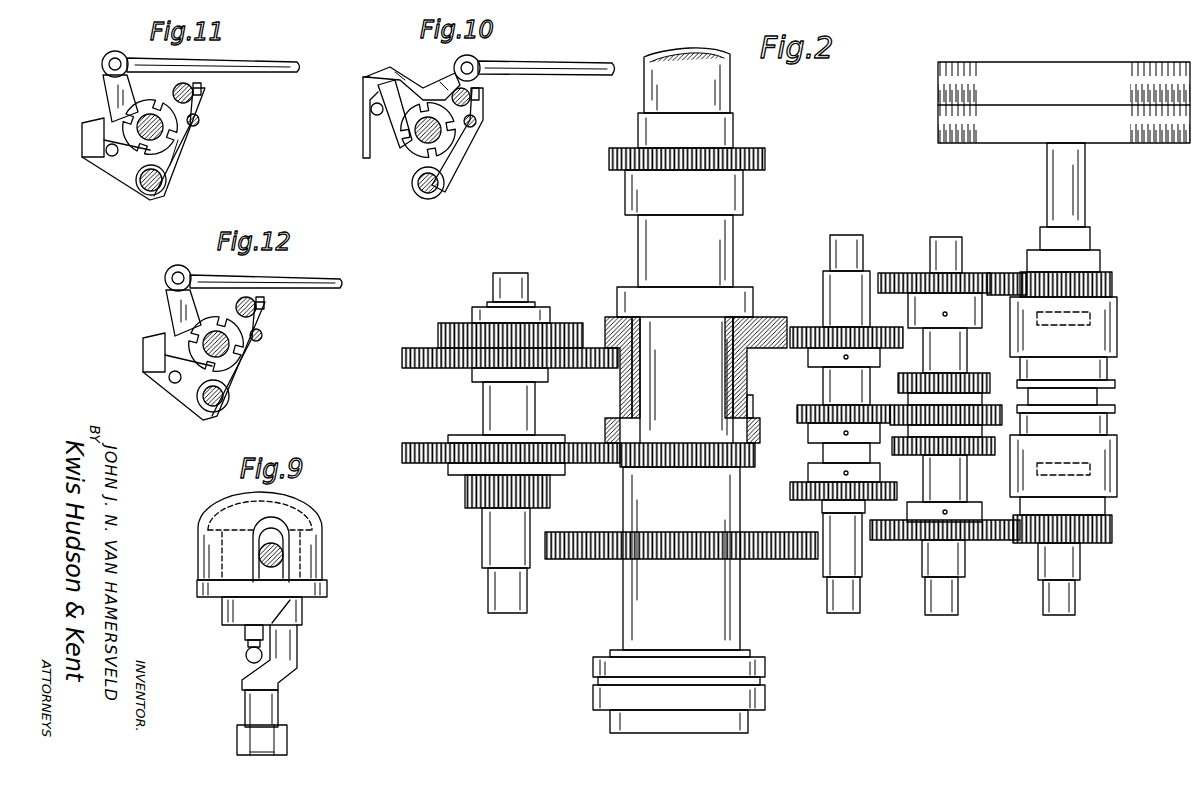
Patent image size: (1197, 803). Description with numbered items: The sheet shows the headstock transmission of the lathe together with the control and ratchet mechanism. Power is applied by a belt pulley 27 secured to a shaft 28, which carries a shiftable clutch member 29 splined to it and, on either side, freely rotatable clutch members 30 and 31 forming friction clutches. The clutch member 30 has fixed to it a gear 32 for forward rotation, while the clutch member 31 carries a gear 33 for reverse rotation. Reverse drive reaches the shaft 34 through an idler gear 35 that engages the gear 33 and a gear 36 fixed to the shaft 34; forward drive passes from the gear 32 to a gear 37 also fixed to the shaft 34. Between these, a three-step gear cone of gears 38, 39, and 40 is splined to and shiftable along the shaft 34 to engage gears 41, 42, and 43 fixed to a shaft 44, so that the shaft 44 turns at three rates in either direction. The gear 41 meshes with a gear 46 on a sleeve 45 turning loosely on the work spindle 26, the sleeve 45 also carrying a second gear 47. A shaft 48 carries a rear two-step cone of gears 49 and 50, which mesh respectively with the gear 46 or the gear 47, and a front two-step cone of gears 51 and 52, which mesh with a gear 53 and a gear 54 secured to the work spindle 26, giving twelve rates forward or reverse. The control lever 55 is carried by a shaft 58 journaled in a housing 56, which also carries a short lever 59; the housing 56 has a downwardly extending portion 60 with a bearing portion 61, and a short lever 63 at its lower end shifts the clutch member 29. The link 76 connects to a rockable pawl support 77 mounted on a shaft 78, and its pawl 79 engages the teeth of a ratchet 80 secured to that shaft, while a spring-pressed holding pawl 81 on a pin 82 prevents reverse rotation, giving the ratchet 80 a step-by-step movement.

In FIG. 2, the work spindle 26 is at (740, 615).
In FIG. 2, the belt pulley 27 is at (985, 62).
In FIG. 2, the shaft 28 is at (1085, 190).
In FIG. 2, the shiftable clutch member 29 is at (1115, 405).
In FIG. 2, the clutch member 30 is at (1117, 475).
In FIG. 2, the clutch member 31 is at (1117, 330).
In FIG. 2, the gear 32 is at (1112, 525).
In FIG. 2, the gear 33 is at (1112, 285).
In FIG. 2, the shaft 34 is at (962, 245).
In FIG. 2, the idler gear 35 is at (1008, 272).
In FIG. 2, the gear 36 is at (975, 272).
In FIG. 2, the gear 37 is at (980, 540).
In FIG. 2, the gear 38 is at (960, 373).
In FIG. 2, the gear 39 is at (990, 405).
In FIG. 2, the gear 40 is at (975, 455).
In FIG. 2, the gear 41 is at (870, 330).
In FIG. 2, the gear 42 is at (815, 405).
In FIG. 2, the gear 43 is at (805, 495).
In FIG. 2, the shaft 44 is at (863, 240).
In FIG. 2, the sleeve 45 is at (745, 375).
In FIG. 2, the gear 46 is at (770, 318).
In FIG. 2, the second gear 47 is at (753, 405).
In FIG. 2, the shaft 48 is at (528, 290).
In FIG. 2, the gear 49 is at (440, 335).
In FIG. 2, the gear 50 is at (440, 368).
In FIG. 2, the gear 51 is at (402, 452).
In FIG. 2, the gear 52 is at (465, 495).
In FIG. 2, the gear 53 is at (755, 455).
In FIG. 2, the gear 54 is at (590, 560).
In FIG. 9, the control lever 55 is at (282, 556).
In FIG. 9, the housing 56 is at (320, 545).
In FIG. 9, the shaft 58 is at (285, 522).
In FIG. 9, the lever 59 is at (245, 632).
In FIG. 9, the downwardly extending portion 60 is at (297, 645).
In FIG. 9, the bearing portion 61 is at (278, 705).
In FIG. 9, the short lever 63 is at (287, 740).
In FIG. 11, the link 76 is at (255, 57).
In FIG. 10, the link 76 is at (540, 62).
In FIG. 12, the link 76 is at (300, 276).
In FIG. 11, the pawl support 77 is at (112, 100).
In FIG. 10, the pawl support 77 is at (415, 85).
In FIG. 12, the pawl support 77 is at (172, 320).
In FIG. 11, the shaft 78 is at (163, 130).
In FIG. 10, the shaft 78 is at (441, 132).
In FIG. 12, the shaft 78 is at (229, 346).
In FIG. 11, the pawl 79 is at (120, 178).
In FIG. 10, the pawl 79 is at (366, 128).
In FIG. 12, the pawl 79 is at (180, 398).
In FIG. 11, the ratchet 80 is at (125, 122).
In FIG. 10, the ratchet 80 is at (405, 150).
In FIG. 12, the ratchet 80 is at (212, 317).
In FIG. 11, the holding pawl 81 is at (182, 152).
In FIG. 10, the holding pawl 81 is at (455, 158).
In FIG. 12, the holding pawl 81 is at (245, 375).
In FIG. 11, the pin 82 is at (200, 118).
In FIG. 10, the pin 82 is at (478, 120).
In FIG. 12, the pin 82 is at (262, 334).